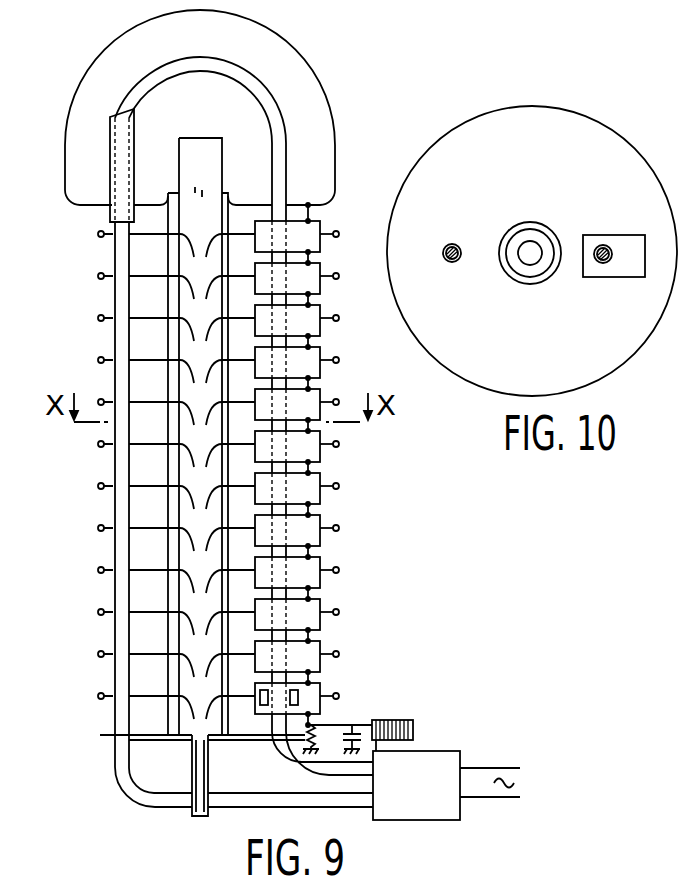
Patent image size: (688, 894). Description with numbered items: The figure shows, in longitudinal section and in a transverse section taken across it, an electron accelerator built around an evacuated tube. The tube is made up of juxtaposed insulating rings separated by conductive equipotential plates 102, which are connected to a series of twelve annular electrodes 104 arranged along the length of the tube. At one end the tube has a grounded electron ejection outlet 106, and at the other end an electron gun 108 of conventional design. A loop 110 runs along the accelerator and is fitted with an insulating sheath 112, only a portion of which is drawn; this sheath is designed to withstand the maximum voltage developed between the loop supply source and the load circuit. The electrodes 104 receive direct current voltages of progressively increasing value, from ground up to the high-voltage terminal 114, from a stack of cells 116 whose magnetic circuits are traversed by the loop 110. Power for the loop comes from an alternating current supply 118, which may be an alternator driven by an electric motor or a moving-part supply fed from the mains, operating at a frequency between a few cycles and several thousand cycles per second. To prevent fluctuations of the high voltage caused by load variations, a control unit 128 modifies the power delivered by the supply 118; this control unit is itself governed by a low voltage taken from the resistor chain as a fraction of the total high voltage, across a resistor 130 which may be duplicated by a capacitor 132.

In FIG. 9, the conductive equipotential plates 102 is at (100, 316).
In FIG. 10, the conductive equipotential plates 102 is at (557, 203).
In FIG. 9, the annular electrodes 104 is at (190, 713).
In FIG. 9, the grounded electron ejection outlet 106 is at (191, 778).
In FIG. 9, the electron gun 108 is at (203, 160).
In FIG. 9, the loop 110 is at (147, 83).
In FIG. 10, the loop 110 is at (452, 262).
In FIG. 9, the insulating sheath 112 is at (111, 133).
In FIG. 10, the insulating sheath 112 is at (452, 244).
In FIG. 9, the high-voltage terminal 114 is at (288, 62).
In FIG. 9, the cells 116 is at (302, 233).
In FIG. 9, the alternating current supply 118 is at (430, 803).
In FIG. 9, the control unit 128 is at (413, 729).
In FIG. 9, the resistor 130 is at (306, 738).
In FIG. 9, the capacitor 132 is at (352, 722).